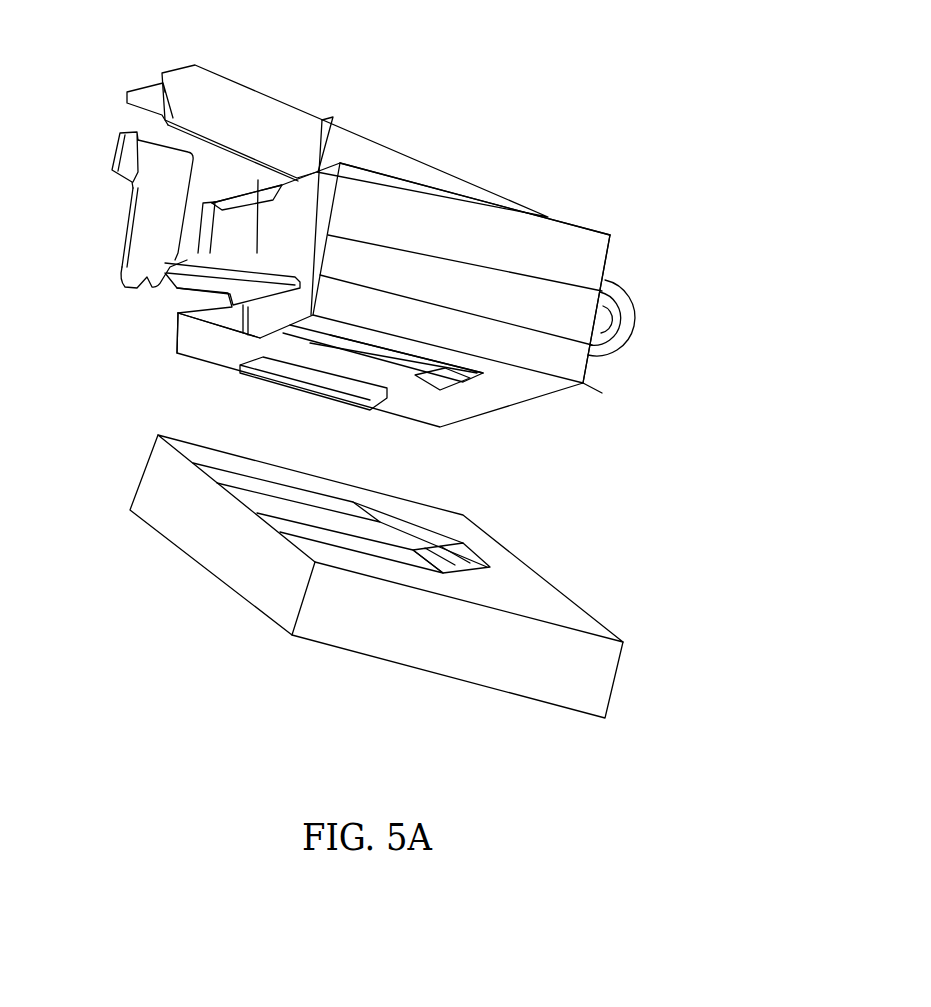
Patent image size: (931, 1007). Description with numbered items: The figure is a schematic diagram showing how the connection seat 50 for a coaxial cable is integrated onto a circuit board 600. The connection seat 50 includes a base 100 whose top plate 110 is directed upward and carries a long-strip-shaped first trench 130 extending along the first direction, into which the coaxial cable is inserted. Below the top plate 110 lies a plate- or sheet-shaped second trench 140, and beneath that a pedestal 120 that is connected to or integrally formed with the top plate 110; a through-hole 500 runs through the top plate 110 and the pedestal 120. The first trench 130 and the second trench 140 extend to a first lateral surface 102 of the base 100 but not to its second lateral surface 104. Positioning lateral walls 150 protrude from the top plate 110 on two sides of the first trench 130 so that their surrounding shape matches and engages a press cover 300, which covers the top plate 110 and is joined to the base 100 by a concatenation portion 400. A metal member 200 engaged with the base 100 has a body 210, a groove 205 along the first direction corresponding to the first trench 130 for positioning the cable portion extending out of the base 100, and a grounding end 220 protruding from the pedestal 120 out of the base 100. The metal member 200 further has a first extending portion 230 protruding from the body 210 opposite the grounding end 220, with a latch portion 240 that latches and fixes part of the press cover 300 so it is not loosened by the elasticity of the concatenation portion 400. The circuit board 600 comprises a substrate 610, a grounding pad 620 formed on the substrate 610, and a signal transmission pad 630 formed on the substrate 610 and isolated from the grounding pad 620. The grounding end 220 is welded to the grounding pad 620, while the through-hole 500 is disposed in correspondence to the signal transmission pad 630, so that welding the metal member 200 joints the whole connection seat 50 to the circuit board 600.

The connection seat 50 is at (624, 203).
The base 100 is at (583, 387).
The first lateral surface 102 is at (190, 337).
The second lateral surface 104 is at (587, 353).
The top plate 110 is at (500, 303).
The pedestal 120 is at (525, 343).
The first trench 130 is at (262, 202).
The second trench 140 is at (245, 308).
The positioning lateral walls 150 is at (447, 233).
The metal member 200 is at (113, 289).
The groove 205 is at (150, 268).
The body 210 is at (177, 253).
The grounding end 220 is at (398, 358).
The first extending portion 230 is at (163, 183).
The latch portion 240 is at (113, 155).
The press cover 300 is at (375, 131).
The concatenation portion 400 is at (620, 283).
The through-hole 500 is at (455, 381).
The circuit board 600 is at (623, 739).
The substrate 610 is at (372, 620).
The grounding pad 620 is at (250, 482).
The signal transmission pad 630 is at (440, 548).